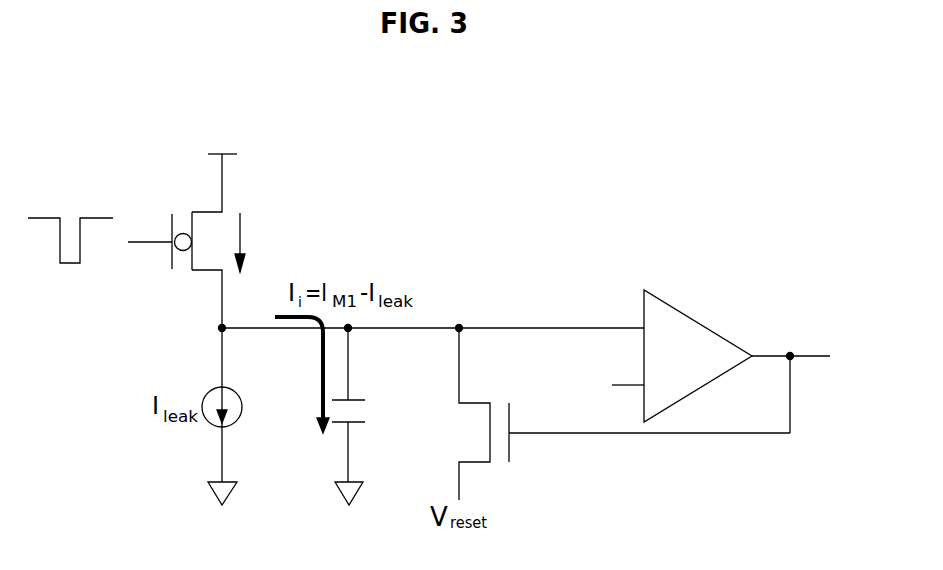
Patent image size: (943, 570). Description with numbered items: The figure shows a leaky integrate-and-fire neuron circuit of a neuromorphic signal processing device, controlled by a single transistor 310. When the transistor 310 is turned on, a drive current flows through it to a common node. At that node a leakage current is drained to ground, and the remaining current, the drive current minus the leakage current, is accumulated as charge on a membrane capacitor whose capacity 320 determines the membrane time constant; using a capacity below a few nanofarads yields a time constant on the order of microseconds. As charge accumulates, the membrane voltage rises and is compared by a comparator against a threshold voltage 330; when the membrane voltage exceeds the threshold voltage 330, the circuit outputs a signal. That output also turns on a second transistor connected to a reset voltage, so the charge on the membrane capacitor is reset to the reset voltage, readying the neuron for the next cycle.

The transistor M1 310 is at (163, 178).
The capacity Cmem of the membrane capacitor 320 is at (384, 398).
The threshold voltage Vth 330 is at (595, 373).